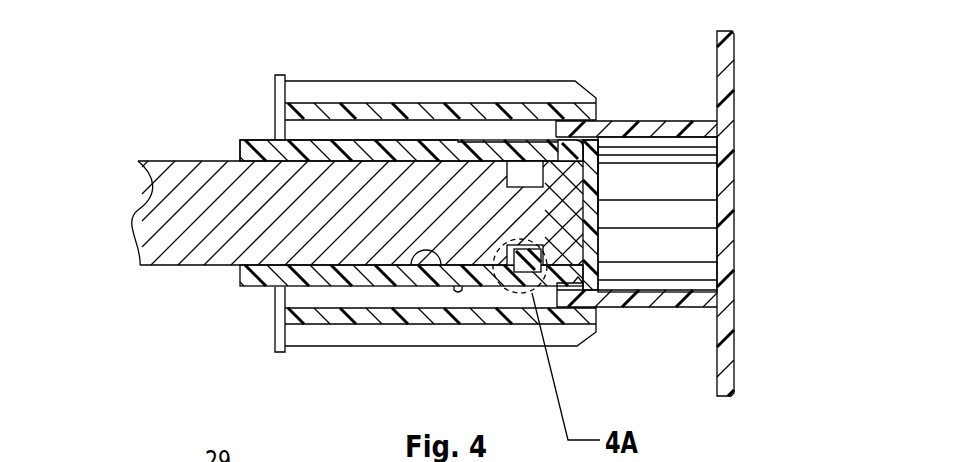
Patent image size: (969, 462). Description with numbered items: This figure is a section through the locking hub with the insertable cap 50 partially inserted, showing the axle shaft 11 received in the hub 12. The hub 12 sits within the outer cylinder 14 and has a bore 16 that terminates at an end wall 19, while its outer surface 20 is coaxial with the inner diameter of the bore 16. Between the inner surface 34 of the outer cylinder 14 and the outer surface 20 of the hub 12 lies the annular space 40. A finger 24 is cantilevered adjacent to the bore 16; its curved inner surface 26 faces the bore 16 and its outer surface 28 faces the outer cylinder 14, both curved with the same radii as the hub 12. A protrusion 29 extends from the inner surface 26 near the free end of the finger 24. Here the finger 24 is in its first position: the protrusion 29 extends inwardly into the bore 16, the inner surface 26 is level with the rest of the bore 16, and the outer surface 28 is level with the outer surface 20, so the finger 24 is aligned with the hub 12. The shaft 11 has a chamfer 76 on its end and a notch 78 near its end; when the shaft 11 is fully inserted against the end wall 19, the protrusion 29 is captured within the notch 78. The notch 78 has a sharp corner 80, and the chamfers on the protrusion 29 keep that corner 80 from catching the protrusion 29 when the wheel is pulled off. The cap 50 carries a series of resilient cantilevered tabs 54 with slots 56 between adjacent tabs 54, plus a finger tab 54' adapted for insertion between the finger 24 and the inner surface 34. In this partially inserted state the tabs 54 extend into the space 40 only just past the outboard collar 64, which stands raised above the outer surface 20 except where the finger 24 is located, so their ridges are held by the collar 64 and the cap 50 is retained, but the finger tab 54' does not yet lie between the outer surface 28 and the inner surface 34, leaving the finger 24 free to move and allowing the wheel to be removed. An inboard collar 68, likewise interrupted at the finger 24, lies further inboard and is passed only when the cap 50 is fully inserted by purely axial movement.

The axle shaft 11 is at (190, 243).
The hub 12 is at (240, 150).
The outer cylinder 14 is at (332, 110).
The bore 16 is at (263, 157).
The end wall 19 is at (600, 180).
The outer surface 20 is at (320, 290).
The finger 24 is at (508, 287).
The inner surface 26 is at (445, 280).
The outer surface 28 is at (487, 283).
The protrusion 29 is at (597, 218).
The inner surface 34 is at (370, 318).
The annular space 40 is at (385, 135).
The insertable cap 50 is at (734, 72).
The tabs 54 is at (636, 78).
The finger tab 54' is at (637, 348).
The slots 56 is at (598, 185).
The outboard collar 64 is at (587, 287).
The inboard collar 68 is at (460, 137).
The chamfer 76 is at (567, 263).
The notch 78 is at (523, 177).
The sharp corner 80 is at (597, 192).